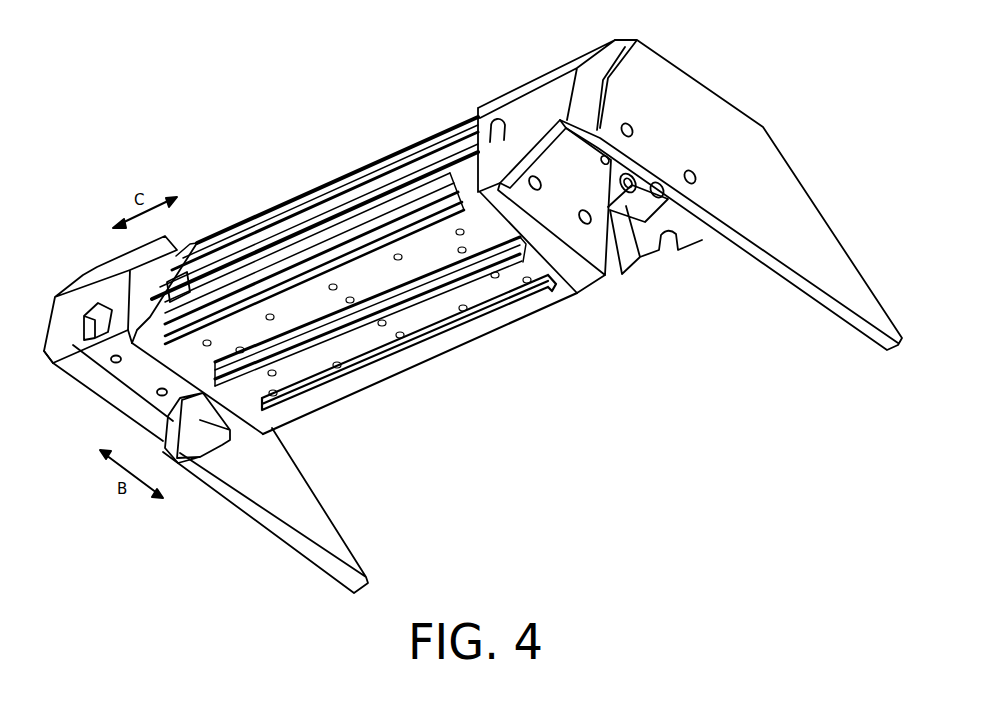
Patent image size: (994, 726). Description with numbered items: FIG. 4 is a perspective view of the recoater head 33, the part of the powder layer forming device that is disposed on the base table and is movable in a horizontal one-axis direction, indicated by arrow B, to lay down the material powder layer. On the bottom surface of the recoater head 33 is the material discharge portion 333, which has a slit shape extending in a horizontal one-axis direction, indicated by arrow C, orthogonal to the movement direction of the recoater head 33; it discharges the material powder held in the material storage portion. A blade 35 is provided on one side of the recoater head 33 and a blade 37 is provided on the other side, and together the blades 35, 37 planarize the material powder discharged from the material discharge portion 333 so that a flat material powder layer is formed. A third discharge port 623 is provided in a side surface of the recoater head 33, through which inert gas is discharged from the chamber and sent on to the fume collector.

The recoater head 33 is at (153, 115).
The blade 35 is at (543, 308).
The blade 37 is at (418, 203).
The material discharge portion 333 is at (350, 327).
The third discharge port 623 is at (230, 229).